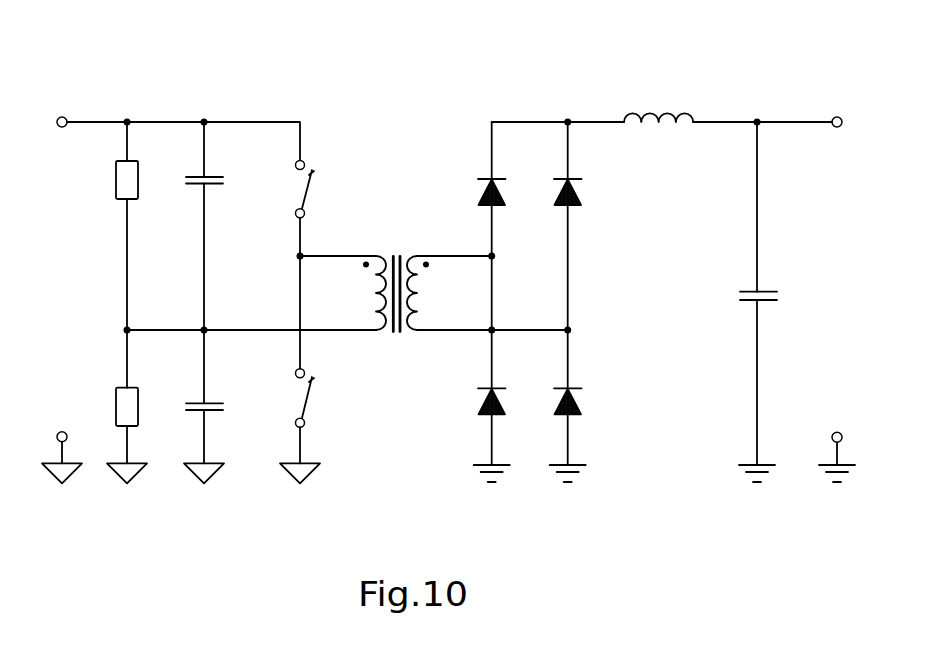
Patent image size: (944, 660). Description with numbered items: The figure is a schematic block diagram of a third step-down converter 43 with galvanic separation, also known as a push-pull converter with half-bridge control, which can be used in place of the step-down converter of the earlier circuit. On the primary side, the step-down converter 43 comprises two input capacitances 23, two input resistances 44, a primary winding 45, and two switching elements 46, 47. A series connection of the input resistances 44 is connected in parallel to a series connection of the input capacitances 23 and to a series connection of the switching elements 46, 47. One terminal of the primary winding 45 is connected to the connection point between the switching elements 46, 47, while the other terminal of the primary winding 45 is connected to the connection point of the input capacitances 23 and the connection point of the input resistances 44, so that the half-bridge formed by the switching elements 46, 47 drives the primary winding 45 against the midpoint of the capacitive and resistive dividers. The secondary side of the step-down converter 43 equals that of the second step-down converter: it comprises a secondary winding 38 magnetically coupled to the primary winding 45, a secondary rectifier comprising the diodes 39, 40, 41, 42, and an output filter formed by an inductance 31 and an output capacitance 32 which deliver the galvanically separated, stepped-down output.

The input capacitance 23 is at (217, 174).
The inductance 31 is at (676, 115).
The output capacitance 32 is at (768, 292).
The secondary winding 38 is at (412, 256).
The diode 39 is at (503, 200).
The diode 40 is at (503, 402).
The diode 41 is at (578, 200).
The diode 42 is at (577, 402).
The third step-down converter 43 is at (312, 524).
The input resistance 44 is at (140, 172).
The primary winding 45 is at (382, 332).
The switching element 46 is at (313, 180).
The switching element 47 is at (308, 392).